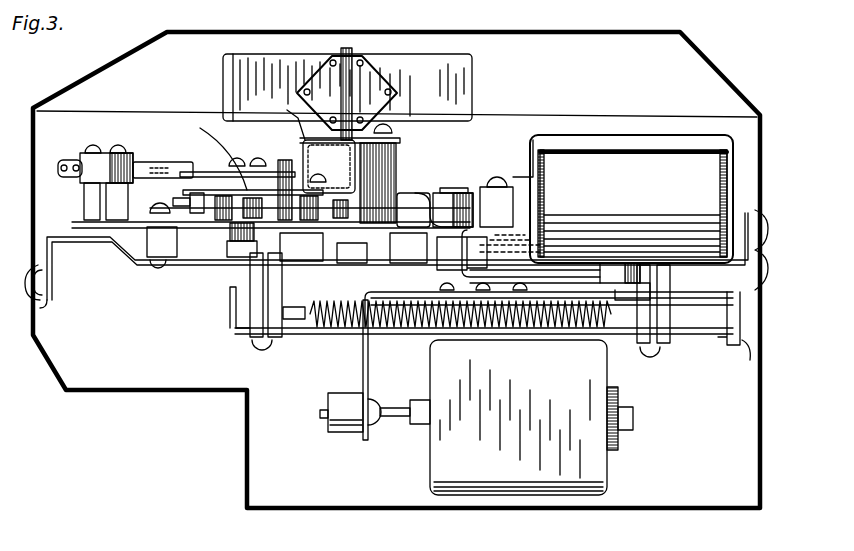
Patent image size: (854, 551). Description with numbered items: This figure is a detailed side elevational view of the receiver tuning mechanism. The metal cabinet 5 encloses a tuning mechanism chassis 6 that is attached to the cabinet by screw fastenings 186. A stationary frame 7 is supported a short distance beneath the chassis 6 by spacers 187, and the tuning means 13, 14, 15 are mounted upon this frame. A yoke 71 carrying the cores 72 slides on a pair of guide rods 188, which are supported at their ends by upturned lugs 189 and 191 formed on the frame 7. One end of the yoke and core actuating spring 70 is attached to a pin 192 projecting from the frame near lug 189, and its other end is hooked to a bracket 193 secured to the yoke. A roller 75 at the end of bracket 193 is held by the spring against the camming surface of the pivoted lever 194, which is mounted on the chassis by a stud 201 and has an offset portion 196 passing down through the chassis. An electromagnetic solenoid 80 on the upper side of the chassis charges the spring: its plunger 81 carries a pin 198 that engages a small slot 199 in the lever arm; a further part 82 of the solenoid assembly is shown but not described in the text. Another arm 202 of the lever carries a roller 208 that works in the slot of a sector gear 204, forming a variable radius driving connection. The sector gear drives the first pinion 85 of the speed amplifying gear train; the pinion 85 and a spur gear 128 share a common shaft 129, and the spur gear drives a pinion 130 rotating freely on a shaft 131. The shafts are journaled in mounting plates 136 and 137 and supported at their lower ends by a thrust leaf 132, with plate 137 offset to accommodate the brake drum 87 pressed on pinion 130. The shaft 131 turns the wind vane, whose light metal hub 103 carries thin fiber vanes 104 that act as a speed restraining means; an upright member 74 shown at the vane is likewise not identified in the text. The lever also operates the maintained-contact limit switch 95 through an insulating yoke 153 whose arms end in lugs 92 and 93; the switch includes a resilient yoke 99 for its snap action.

The metal cabinet 5 is at (597, 36).
The tuning mechanism chassis 6 is at (182, 263).
The stationary frame 7 is at (322, 345).
The tuning means 13 is at (566, 417).
The tuning means 14 is at (566, 417).
The tuning means 15 is at (608, 382).
The yoke and core actuating spring 70 is at (322, 303).
The yoke 71 is at (369, 363).
The cores 72 is at (382, 420).
The bar 74 is at (346, 58).
The roller 75 is at (617, 277).
The electromagnetic solenoid 80 is at (626, 132).
The solenoid plunger 81 is at (515, 176).
The plate 82 is at (665, 153).
The first pinion 85 is at (300, 180).
The brake drum 87 is at (363, 197).
The lug 92 is at (178, 165).
The lug 93 is at (284, 185).
The maintained-contact limit switch 95 is at (130, 152).
The resilient yoke 99 is at (134, 144).
The hub 103 is at (347, 93).
The vanes 104 is at (225, 78).
The spur gear 128 is at (255, 230).
The shaft 129 is at (295, 226).
The pinion 130 is at (352, 210).
The shaft 131 is at (348, 234).
The thrust leaf 132 is at (233, 258).
The mounting plate 136 is at (137, 238).
The mounting plate 137 is at (237, 141).
The yoke 153 is at (250, 164).
The screw fastenings 186 is at (48, 283).
The spacers 187 is at (667, 292).
The guide rods 188 is at (728, 345).
The upturned lug 189 is at (228, 328).
The upturned lug 191 is at (748, 360).
The pin 192 is at (276, 345).
The bracket 193 is at (600, 298).
The pivoted lever 194 is at (427, 225).
The offset portion 196 is at (435, 245).
The pin 198 is at (448, 272).
The slot 199 is at (507, 247).
The stud 201 is at (450, 188).
The arm 202 is at (426, 192).
The sector gear 204 is at (173, 202).
The roller 208 is at (220, 197).